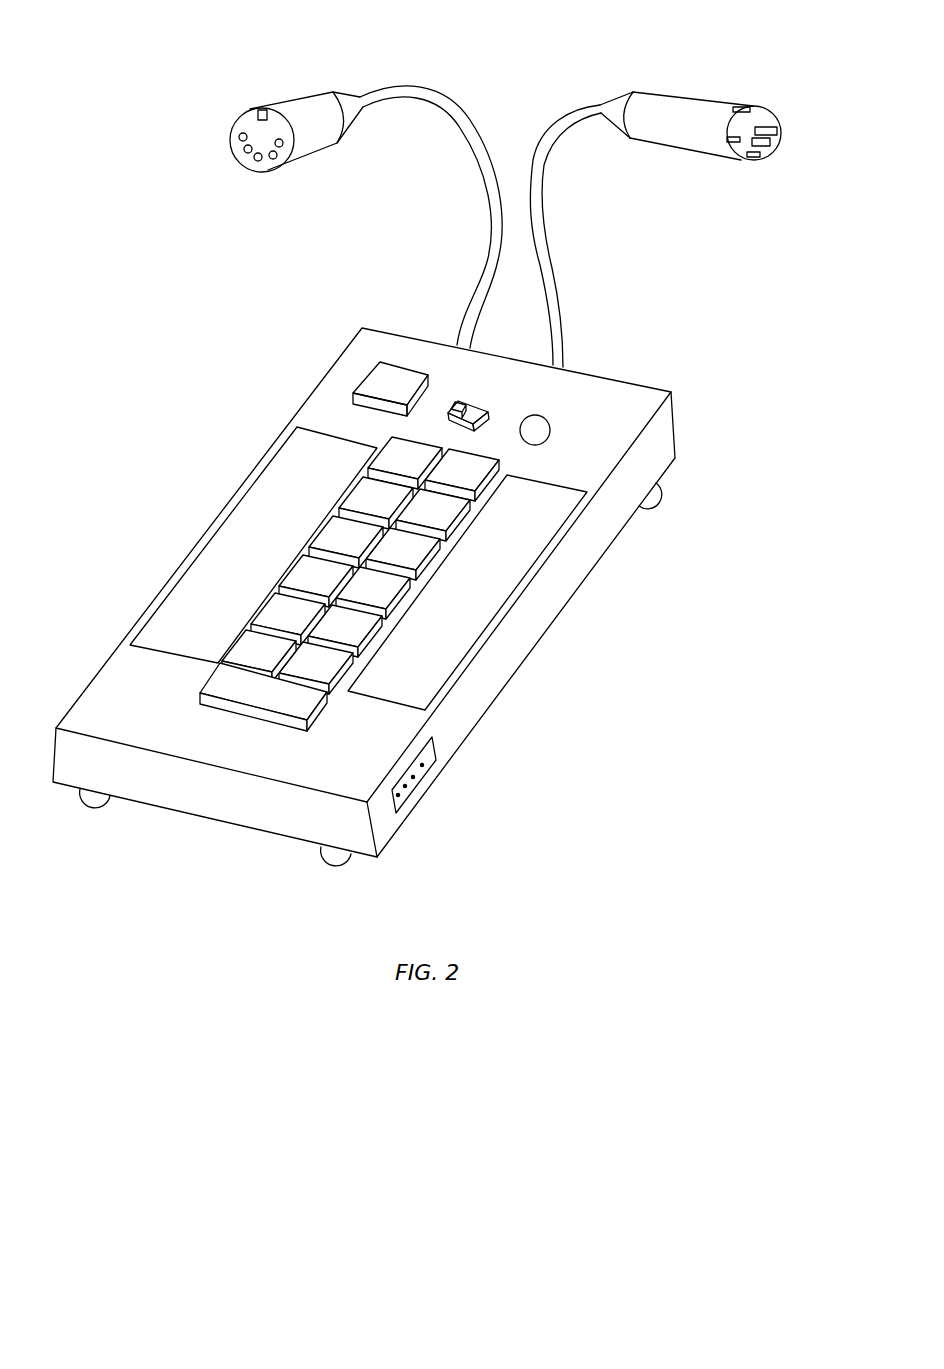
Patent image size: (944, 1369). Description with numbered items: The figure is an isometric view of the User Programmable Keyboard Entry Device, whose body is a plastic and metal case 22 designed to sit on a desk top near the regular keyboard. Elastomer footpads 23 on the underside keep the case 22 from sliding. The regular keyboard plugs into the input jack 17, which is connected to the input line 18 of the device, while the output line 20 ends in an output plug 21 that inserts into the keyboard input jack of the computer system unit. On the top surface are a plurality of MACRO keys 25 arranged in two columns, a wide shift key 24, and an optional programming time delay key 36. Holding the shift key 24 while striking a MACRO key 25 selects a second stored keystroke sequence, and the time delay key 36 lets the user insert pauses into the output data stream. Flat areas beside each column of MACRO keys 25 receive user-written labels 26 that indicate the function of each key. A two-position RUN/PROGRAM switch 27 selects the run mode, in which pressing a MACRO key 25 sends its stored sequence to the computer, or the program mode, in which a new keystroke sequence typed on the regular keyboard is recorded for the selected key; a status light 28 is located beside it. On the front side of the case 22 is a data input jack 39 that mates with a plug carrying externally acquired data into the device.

The input jack 17 is at (312, 103).
The input line 18 is at (445, 110).
The output line 20 is at (552, 270).
The output plug 21 is at (672, 110).
The case 22 is at (318, 384).
The elastomer footpads 23 is at (97, 803).
The shift key 24 is at (222, 690).
The MACRO keys 25 is at (332, 538).
The labels 26 is at (220, 574).
The RUN/PROGRAM switch 27 is at (458, 402).
The status light 28 is at (537, 428).
The programming time delay key 36 is at (380, 383).
The data input jack 39 is at (405, 790).